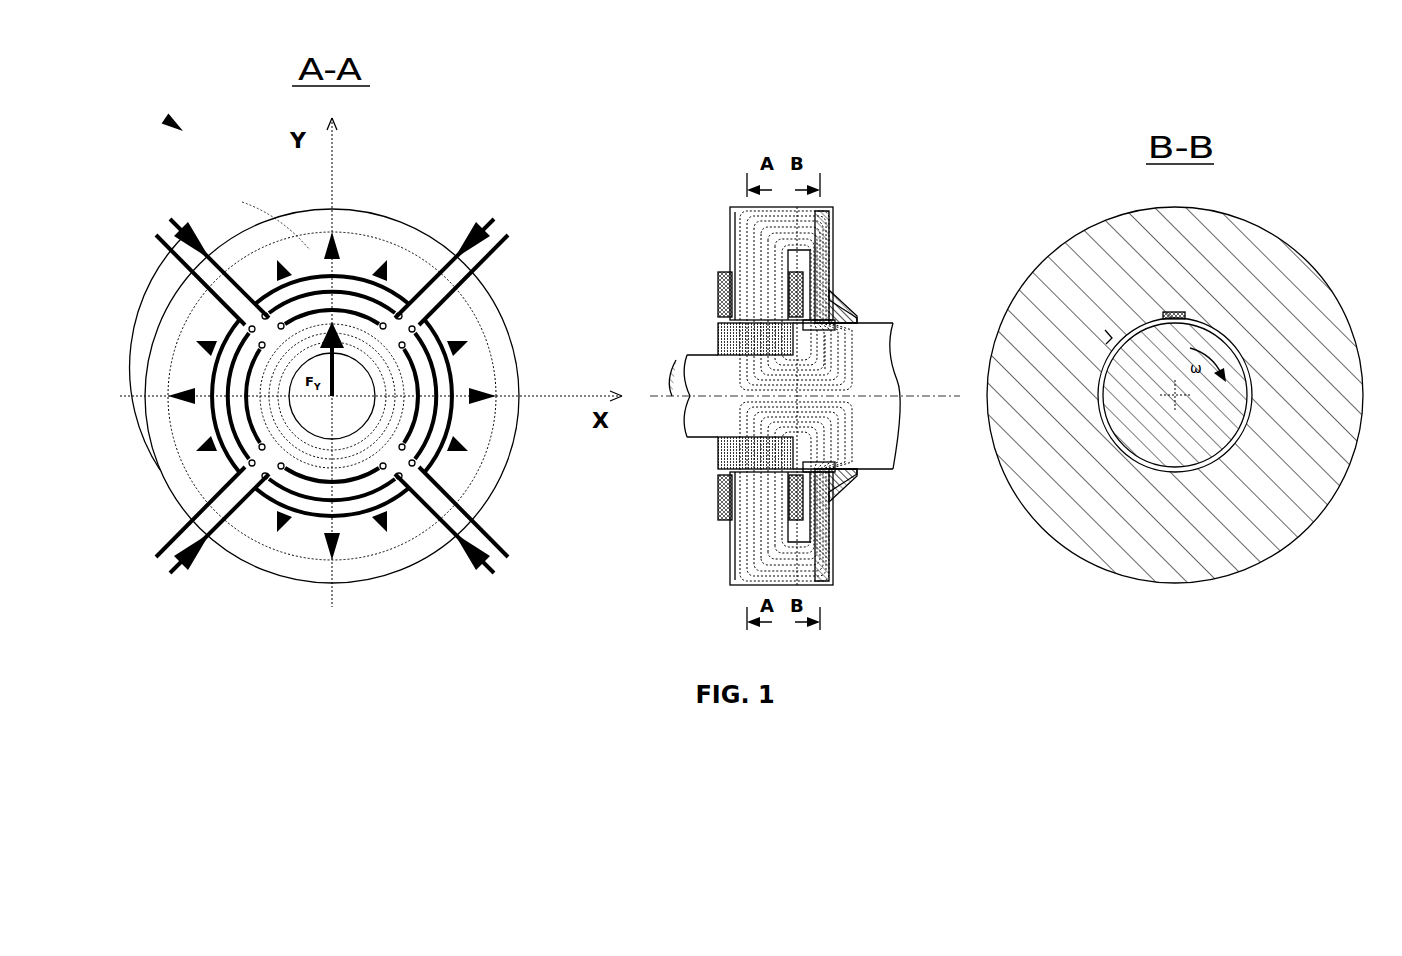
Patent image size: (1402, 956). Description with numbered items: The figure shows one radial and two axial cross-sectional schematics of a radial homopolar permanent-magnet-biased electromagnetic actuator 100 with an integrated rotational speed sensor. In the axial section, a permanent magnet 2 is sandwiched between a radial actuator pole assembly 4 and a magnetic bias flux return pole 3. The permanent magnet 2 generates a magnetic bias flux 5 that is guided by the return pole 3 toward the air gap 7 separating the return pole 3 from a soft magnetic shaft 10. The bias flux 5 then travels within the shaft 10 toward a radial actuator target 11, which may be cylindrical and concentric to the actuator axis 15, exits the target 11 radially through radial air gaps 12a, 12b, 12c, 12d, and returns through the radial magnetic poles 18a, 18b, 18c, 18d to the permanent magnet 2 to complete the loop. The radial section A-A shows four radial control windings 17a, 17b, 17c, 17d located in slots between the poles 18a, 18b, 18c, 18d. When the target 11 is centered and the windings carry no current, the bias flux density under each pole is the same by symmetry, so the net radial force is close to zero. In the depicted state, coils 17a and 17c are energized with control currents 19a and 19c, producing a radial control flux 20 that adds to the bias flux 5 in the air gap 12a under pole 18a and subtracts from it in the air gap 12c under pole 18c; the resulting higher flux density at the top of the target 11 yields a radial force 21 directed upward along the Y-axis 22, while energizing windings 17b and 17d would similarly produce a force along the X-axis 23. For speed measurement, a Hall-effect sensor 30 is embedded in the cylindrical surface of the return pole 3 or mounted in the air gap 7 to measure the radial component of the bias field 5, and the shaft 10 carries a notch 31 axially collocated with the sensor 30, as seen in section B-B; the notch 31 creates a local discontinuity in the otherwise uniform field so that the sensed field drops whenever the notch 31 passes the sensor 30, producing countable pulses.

The electromagnetic actuator 100 is at (165, 118).
The permanent magnet 2 is at (797, 215).
The magnetic bias flux return pole 3 is at (832, 260).
The radial actuator pole assembly 4 is at (177, 490).
The magnetic bias flux 5 is at (737, 252).
The air gap 7 is at (840, 325).
The soft magnetic shaft 10 is at (290, 395).
The radial actuator target 11 is at (386, 425).
The radial air gap 12a is at (490, 230).
The radial air gap 12b is at (468, 470).
The radial air gap 12c is at (265, 535).
The radial air gap 12d is at (232, 470).
The actuator axis 15 is at (687, 362).
The radial control winding 17a is at (345, 275).
The radial control winding 17b is at (441, 345).
The radial control winding 17c is at (392, 500).
The radial control winding 17d is at (228, 390).
The radial magnetic pole 18a is at (378, 258).
The radial magnetic pole 18b is at (497, 323).
The radial magnetic pole 18c is at (350, 530).
The radial magnetic pole 18d is at (207, 345).
The control current 19a is at (185, 232).
The control current 19c is at (185, 565).
The radial control flux 20 is at (487, 288).
The radial force F_Y 21 is at (495, 370).
The Y-axis 22 is at (322, 200).
The X-axis 23 is at (560, 398).
The Hall-Effect sensor 30 is at (833, 305).
The notch 31 is at (826, 345).